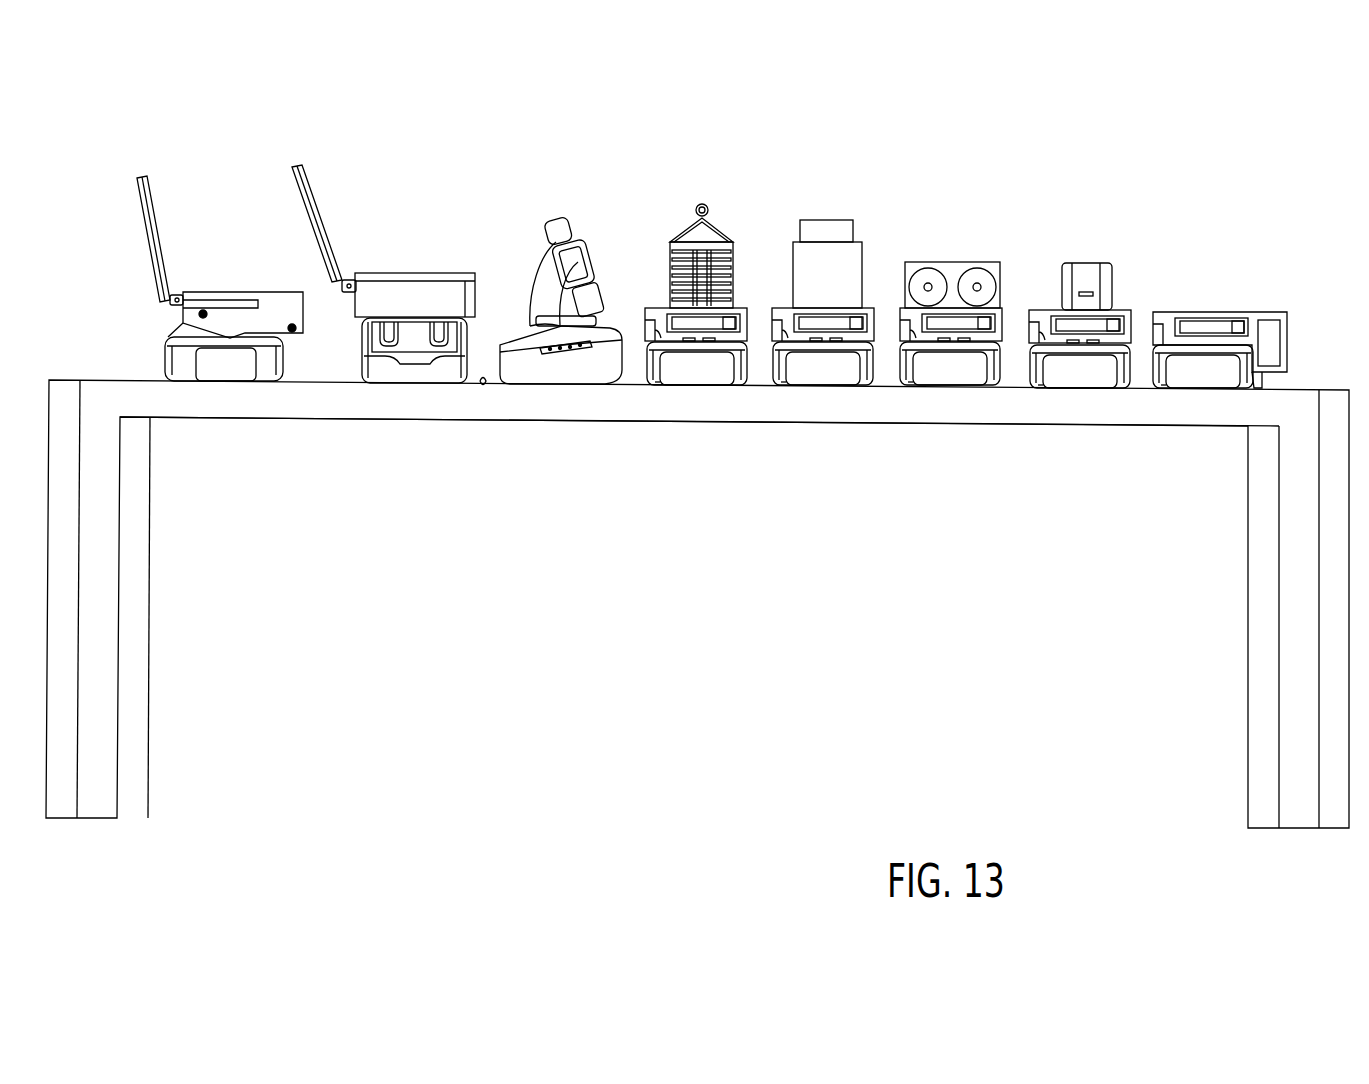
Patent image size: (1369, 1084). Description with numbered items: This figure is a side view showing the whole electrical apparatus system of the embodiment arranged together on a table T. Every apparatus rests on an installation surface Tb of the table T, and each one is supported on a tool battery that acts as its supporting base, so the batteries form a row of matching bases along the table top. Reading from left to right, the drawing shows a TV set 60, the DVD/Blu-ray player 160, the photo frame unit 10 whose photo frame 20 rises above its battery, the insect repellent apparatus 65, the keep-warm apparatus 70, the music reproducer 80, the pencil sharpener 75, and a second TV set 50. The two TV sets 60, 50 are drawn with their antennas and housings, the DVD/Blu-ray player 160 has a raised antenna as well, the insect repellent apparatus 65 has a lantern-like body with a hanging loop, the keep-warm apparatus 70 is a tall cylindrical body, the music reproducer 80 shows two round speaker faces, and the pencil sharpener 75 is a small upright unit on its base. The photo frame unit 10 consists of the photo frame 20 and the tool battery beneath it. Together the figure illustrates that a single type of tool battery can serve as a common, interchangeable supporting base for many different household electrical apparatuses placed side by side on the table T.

The photo frame unit 10 is at (570, 203).
The photo frame 20 is at (572, 237).
The TV set 50 is at (1255, 310).
The TV set 60 is at (232, 272).
The insect repellent apparatus 65 is at (722, 230).
The keep-warm apparatus 70 is at (853, 262).
The pencil sharpener 75 is at (1092, 262).
The music reproducer 80 is at (950, 262).
The DVD/Blu-ray player 160 is at (407, 260).
The table T is at (1344, 388).
The installation surface Tb is at (483, 390).